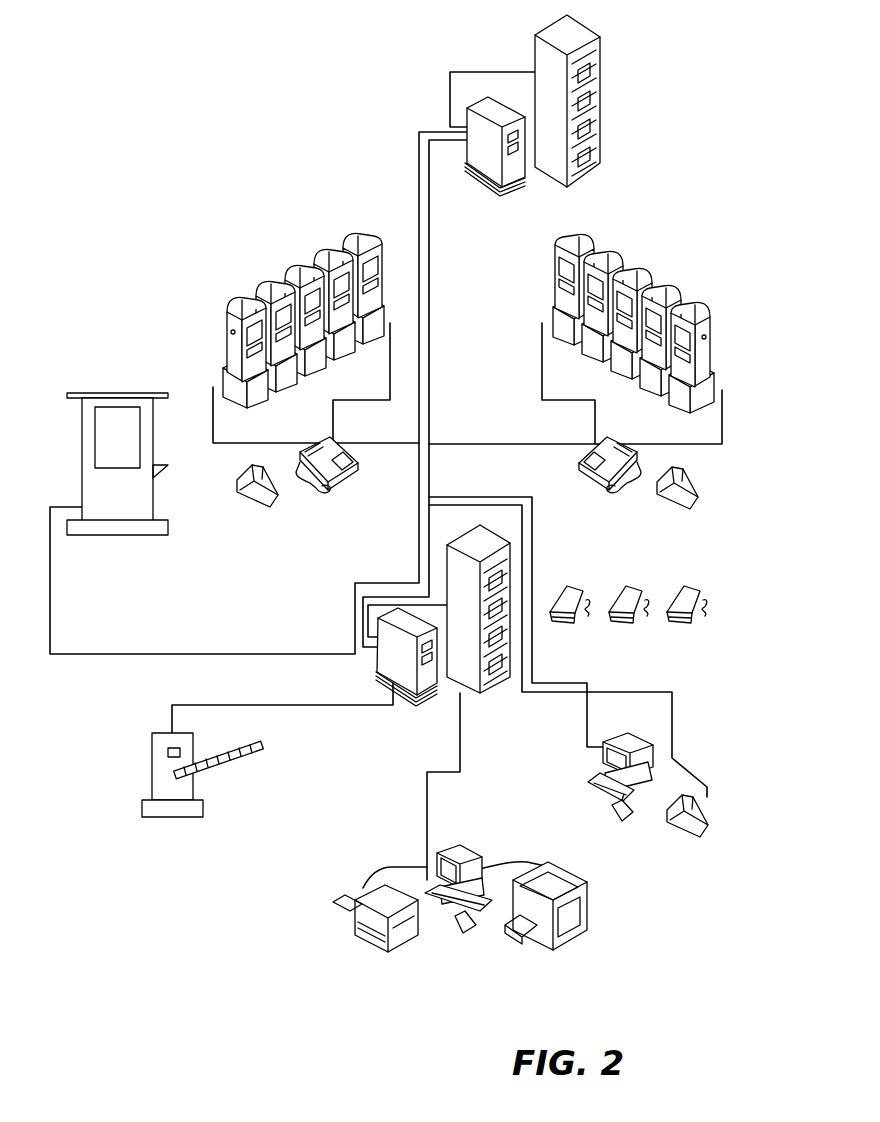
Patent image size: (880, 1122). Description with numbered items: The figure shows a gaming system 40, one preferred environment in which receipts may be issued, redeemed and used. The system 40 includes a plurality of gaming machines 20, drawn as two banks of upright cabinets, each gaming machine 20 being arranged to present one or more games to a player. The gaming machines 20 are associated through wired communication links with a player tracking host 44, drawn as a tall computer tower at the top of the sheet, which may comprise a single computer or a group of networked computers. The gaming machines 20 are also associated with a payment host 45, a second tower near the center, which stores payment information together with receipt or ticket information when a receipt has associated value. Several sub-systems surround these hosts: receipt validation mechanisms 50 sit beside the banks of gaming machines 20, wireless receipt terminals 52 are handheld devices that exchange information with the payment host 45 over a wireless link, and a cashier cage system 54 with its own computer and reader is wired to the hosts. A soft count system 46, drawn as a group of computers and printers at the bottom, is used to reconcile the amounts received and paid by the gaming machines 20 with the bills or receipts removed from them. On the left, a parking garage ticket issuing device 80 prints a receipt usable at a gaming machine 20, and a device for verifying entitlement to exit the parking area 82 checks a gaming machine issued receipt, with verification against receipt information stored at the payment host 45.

The gaming system 40 is at (434, 526).
The player tracking host 44 is at (600, 72).
The gaming machine 20 is at (717, 343).
The receipt validation mechanism 50 is at (700, 483).
The device for verifying entitlement to exit the parking area 82 is at (125, 393).
The payment host 45 is at (458, 568).
The wireless receipt terminal 52 is at (705, 593).
The cashier cage system 54 is at (730, 768).
The parking garage ticket issuing device 80 is at (197, 787).
The soft count system 46 is at (406, 985).